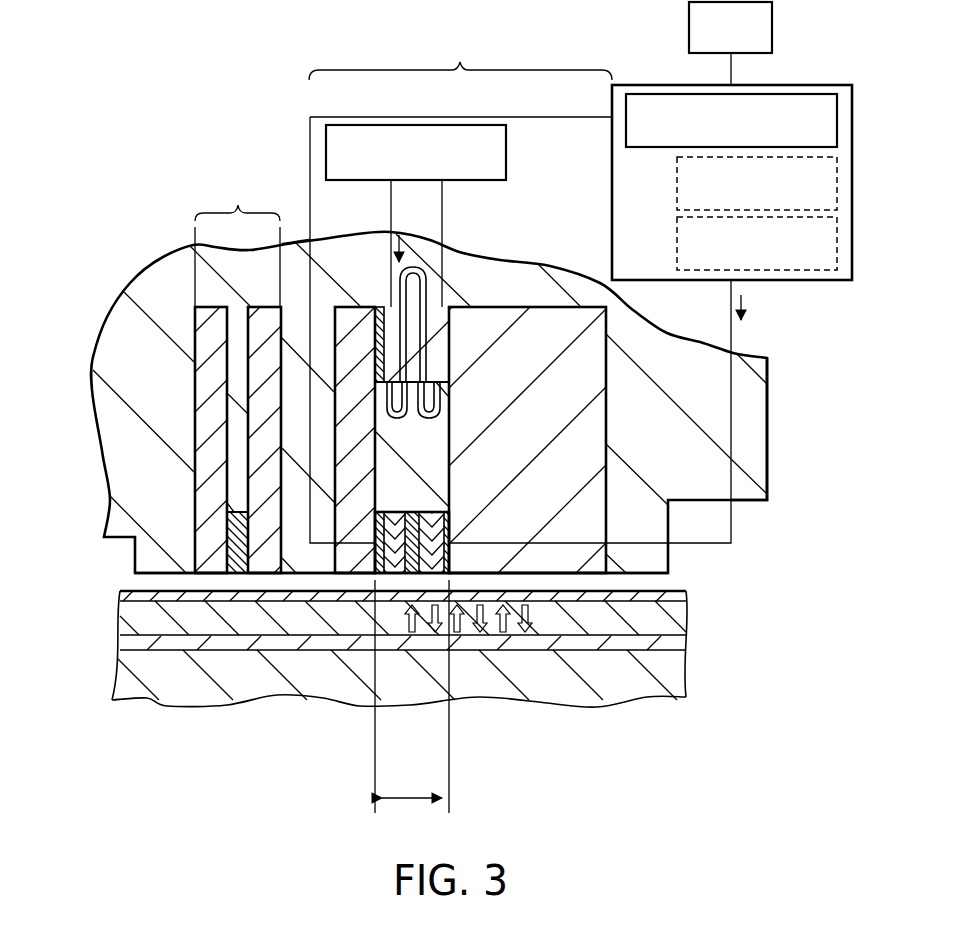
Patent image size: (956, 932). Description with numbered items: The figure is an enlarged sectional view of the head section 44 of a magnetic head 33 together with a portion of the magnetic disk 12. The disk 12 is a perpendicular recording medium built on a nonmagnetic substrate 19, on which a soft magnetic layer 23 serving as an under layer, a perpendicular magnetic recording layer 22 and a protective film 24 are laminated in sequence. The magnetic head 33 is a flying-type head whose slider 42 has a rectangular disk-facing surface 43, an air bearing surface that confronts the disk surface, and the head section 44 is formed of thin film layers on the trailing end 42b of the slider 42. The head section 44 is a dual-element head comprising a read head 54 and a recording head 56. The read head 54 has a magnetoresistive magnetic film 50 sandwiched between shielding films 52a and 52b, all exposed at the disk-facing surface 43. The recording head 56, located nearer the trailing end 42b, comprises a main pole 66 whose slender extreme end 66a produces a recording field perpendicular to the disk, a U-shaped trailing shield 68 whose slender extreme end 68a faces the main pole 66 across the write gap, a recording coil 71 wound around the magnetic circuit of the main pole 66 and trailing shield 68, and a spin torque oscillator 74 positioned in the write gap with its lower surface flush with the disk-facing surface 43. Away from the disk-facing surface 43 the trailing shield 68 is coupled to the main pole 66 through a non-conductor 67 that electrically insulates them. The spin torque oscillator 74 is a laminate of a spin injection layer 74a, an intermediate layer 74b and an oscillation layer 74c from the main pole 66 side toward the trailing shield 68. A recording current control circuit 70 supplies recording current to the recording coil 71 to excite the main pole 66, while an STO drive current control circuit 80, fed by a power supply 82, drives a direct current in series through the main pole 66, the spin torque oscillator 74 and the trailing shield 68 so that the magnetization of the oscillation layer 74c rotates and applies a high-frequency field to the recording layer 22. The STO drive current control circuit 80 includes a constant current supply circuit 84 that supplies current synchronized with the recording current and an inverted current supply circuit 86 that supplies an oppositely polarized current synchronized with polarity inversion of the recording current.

The magnetic disk 12 is at (433, 664).
The substrate 19 is at (660, 683).
The perpendicular magnetic recording layer 22 is at (598, 620).
The soft magnetic layer 23 is at (628, 642).
The protective film 24 is at (663, 595).
The magnetic head 33 is at (148, 162).
The slider 42 is at (140, 303).
The trailing end 42b is at (770, 460).
The disk-facing surface 43 is at (303, 575).
The head section 44 is at (296, 234).
The magnetic film 50 is at (243, 575).
The shielding film 52a is at (250, 430).
The shielding film 52b is at (203, 477).
The read head 54 is at (237, 241).
The recording head 56 is at (460, 287).
The main pole 66 is at (353, 308).
The extreme end 66a is at (350, 575).
The non-conductor 67 is at (381, 308).
The trailing shield 68 is at (559, 330).
The extreme end 68a is at (541, 558).
The recording current control circuit 70 is at (506, 157).
The recording coil 71 is at (426, 290).
The spin torque oscillator 74 is at (415, 664).
The spin injection layer 74a is at (370, 575).
The intermediate layer 74b is at (386, 575).
The oscillation layer 74c is at (455, 575).
The STO drive current control circuit 80 is at (650, 287).
The power supply 82 is at (689, 26).
The constant current supply circuit 84 is at (677, 182).
The inverted current supply circuit 86 is at (677, 238).